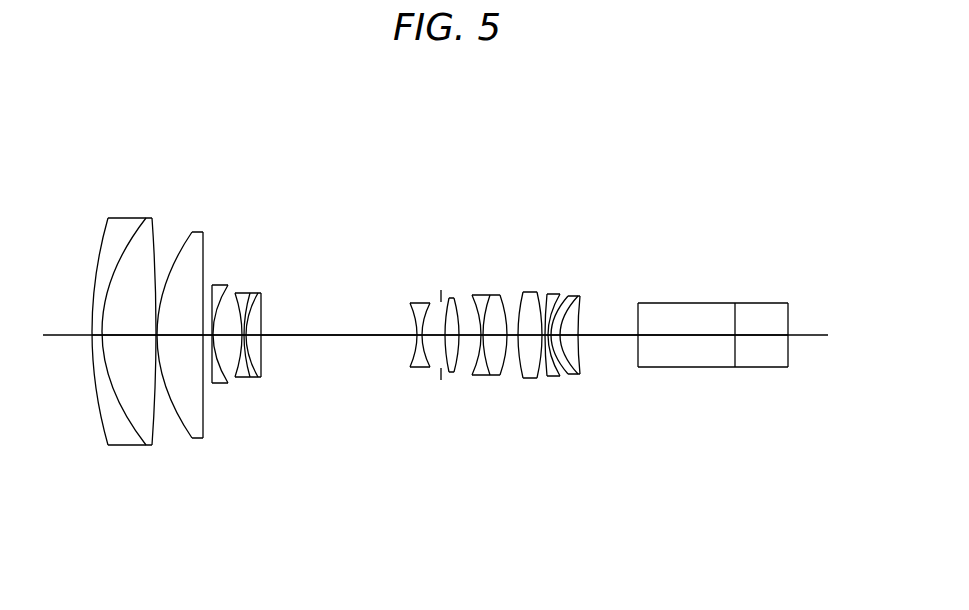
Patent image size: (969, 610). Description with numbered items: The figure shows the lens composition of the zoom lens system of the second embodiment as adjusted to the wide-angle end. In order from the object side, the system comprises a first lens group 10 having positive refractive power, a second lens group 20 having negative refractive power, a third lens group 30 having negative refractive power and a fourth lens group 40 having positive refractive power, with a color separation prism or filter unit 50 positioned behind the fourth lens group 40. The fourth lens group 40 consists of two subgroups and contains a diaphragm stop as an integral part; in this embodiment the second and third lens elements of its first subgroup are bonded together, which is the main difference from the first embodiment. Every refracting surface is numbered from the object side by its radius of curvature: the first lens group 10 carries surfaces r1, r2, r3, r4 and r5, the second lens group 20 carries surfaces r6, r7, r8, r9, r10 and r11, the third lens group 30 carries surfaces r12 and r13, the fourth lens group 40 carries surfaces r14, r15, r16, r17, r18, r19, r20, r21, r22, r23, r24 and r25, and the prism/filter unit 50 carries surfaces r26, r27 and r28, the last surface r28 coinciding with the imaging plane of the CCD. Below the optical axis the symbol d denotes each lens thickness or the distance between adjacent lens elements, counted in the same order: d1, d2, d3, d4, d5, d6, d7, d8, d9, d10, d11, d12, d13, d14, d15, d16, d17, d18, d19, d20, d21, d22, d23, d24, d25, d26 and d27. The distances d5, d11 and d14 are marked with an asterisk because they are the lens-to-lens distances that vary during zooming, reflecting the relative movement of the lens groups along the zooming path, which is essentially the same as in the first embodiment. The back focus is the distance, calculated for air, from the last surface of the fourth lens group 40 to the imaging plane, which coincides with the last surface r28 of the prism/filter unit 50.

The first lens group 10 is at (210, 133).
The second lens group 20 is at (202, 162).
The third lens group 30 is at (452, 133).
The fourth lens group 40 is at (737, 133).
The prism/filter unit 50 is at (803, 133).
The radius of curvature of surface 1 r1 is at (108, 218).
The radius of curvature of surface 2 r2 is at (146, 218).
The radius of curvature of surface 3 r3 is at (152, 218).
The radius of curvature of surface 4 r4 is at (192, 232).
The radius of curvature of surface 5 r5 is at (203, 232).
The radius of curvature of surface 6 r6 is at (206, 335).
The radius of curvature of surface 7 r7 is at (228, 285).
The radius of curvature of surface 8 r8 is at (235, 293).
The radius of curvature of surface 9 r9 is at (250, 293).
The radius of curvature of surface 10 r10 is at (258, 293).
The radius of curvature of surface 11 r11 is at (261, 293).
The radius of curvature of surface 12 r12 is at (411, 303).
The radius of curvature of surface 13 r13 is at (427, 303).
The radius of curvature of surface 14 r14 is at (449, 298).
The radius of curvature of surface 15 r15 is at (454, 298).
The radius of curvature of surface 16 r16 is at (472, 295).
The radius of curvature of surface 17 r17 is at (490, 295).
The radius of curvature of surface 18 r18 is at (500, 295).
The radius of curvature of surface 19 r19 is at (523, 292).
The radius of curvature of surface 20 r20 is at (537, 292).
The radius of curvature of surface 21 r21 is at (547, 294).
The radius of curvature of surface 22 r22 is at (560, 294).
The radius of curvature of surface 23 r23 is at (568, 296).
The radius of curvature of surface 24 r24 is at (578, 296).
The radius of curvature of surface 25 r25 is at (581, 296).
The radius of curvature of surface 26 r26 is at (638, 303).
The radius of curvature of surface 27 r27 is at (735, 303).
The last surface of the prism/filter unit r28 is at (788, 303).
The lens thickness or distance 1 d1 is at (95, 335).
The lens thickness or distance 2 d2 is at (129, 335).
The lens thickness or distance 3 d3 is at (156, 335).
The lens thickness or distance 4 d4 is at (157, 335).
The variable lens-to-lens distance 5 d5 is at (206, 335).
The lens thickness or distance 6 d6 is at (212, 335).
The lens thickness or distance 7 d7 is at (224, 335).
The lens thickness or distance 8 d8 is at (243, 335).
The lens thickness or distance 9 d9 is at (244, 335).
The lens thickness or distance 10 d10 is at (250, 335).
The variable lens-to-lens distance 11 d11 is at (343, 335).
The lens thickness or distance 12 d12 is at (419, 335).
The lens thickness or distance 13 d13 is at (424, 335).
The variable lens-to-lens distance 14 d14 is at (452, 335).
The lens thickness or distance 15 d15 is at (466, 335).
The lens thickness or distance 16 d16 is at (484, 335).
The lens thickness or distance 17 d17 is at (497, 335).
The lens thickness or distance 18 d18 is at (513, 335).
The lens thickness or distance 19 d19 is at (531, 335).
The lens thickness or distance 20 d20 is at (544, 335).
The lens thickness or distance 21 d21 is at (547, 335).
The lens thickness or distance 22 d22 is at (550, 335).
The lens thickness or distance 23 d23 is at (557, 335).
The lens thickness or distance 24 d24 is at (570, 335).
The lens thickness or distance 25 d25 is at (608, 335).
The lens thickness or distance 26 d26 is at (687, 335).
The lens thickness or distance 27 d27 is at (763, 335).